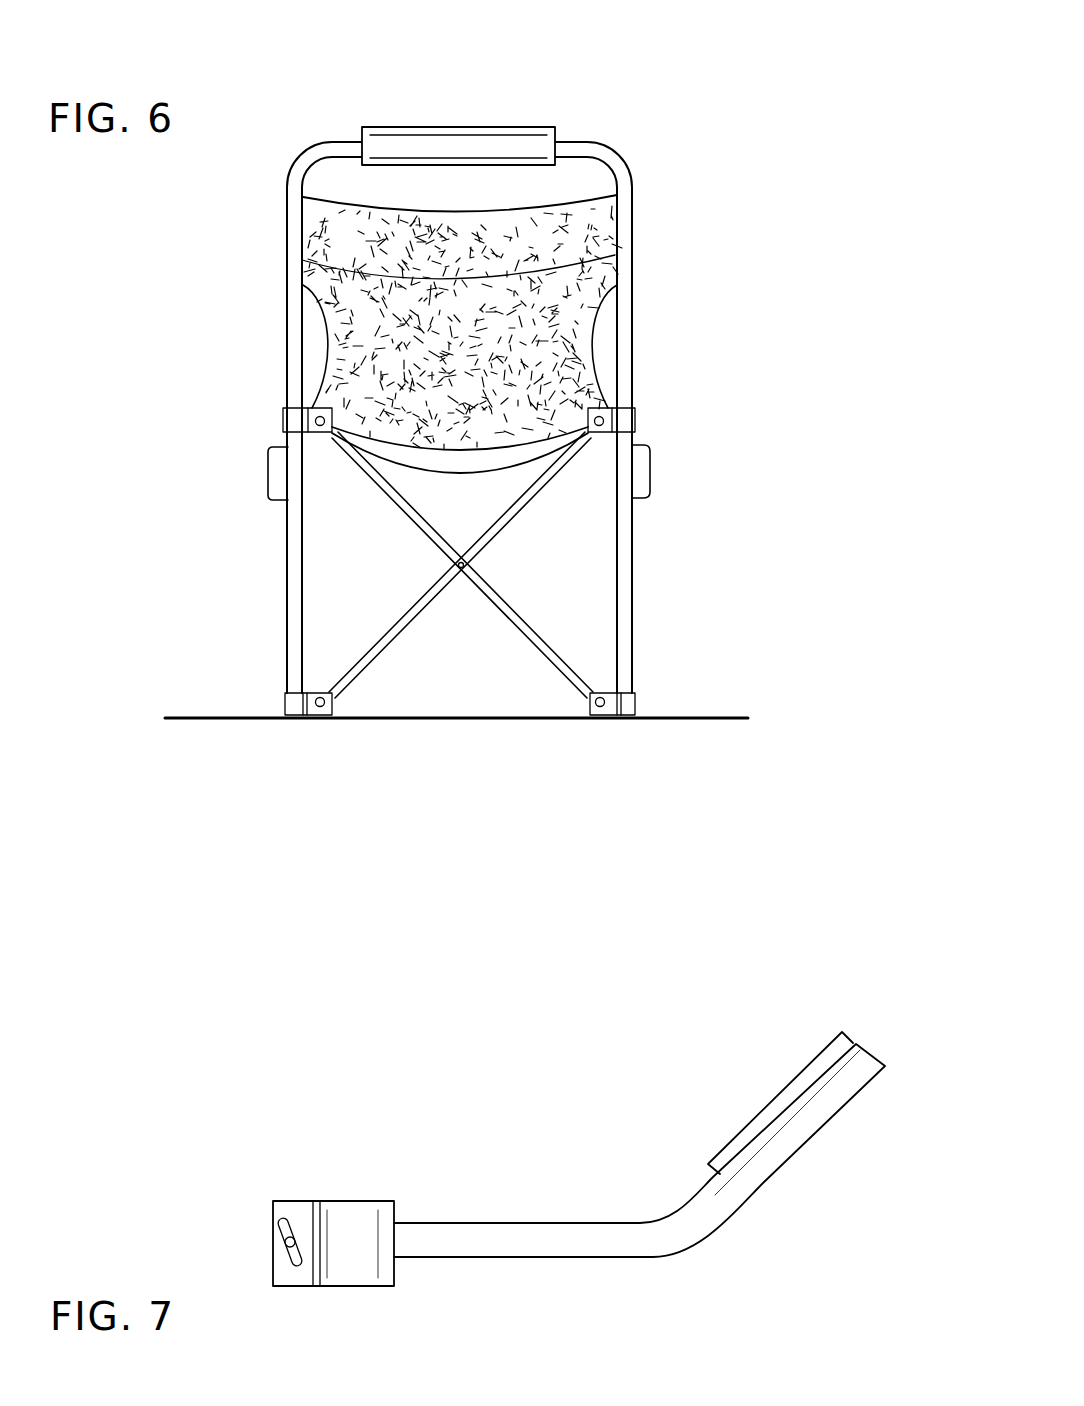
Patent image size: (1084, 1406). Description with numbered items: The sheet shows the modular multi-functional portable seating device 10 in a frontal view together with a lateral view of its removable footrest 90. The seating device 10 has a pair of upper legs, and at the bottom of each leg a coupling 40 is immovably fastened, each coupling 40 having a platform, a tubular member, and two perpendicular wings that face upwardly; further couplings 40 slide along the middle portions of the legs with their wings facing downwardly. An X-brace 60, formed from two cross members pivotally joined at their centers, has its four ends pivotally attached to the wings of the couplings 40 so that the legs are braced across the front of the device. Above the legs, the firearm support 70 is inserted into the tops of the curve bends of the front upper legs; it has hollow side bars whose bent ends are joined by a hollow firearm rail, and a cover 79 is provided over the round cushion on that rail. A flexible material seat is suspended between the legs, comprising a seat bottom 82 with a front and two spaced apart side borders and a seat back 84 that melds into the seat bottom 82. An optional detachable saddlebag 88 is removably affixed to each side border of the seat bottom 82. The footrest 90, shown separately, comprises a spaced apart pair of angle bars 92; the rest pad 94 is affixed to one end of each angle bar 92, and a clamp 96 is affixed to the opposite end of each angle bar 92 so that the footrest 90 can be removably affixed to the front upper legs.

In FIG. 6, the modular multi-functional portable seating device 10 is at (700, 790).
In FIG. 6, the coupling 40 is at (320, 716).
In FIG. 6, the X-brace 60 is at (462, 596).
In FIG. 6, the firearm support 70 is at (690, 145).
In FIG. 6, the cover 79 is at (537, 127).
In FIG. 6, the seat bottom 82 is at (412, 478).
In FIG. 6, the seat back 84 is at (597, 266).
In FIG. 6, the saddlebag 88 is at (268, 466).
In FIG. 7, the footrest 90 is at (485, 1305).
In FIG. 7, the angle bar 92 is at (656, 1257).
In FIG. 7, the rest pad 94 is at (755, 1113).
In FIG. 7, the clamp 96 is at (320, 1178).